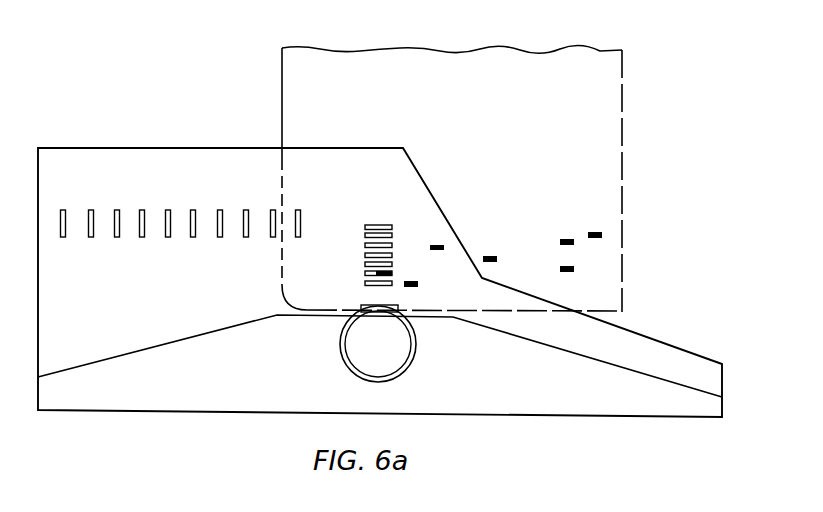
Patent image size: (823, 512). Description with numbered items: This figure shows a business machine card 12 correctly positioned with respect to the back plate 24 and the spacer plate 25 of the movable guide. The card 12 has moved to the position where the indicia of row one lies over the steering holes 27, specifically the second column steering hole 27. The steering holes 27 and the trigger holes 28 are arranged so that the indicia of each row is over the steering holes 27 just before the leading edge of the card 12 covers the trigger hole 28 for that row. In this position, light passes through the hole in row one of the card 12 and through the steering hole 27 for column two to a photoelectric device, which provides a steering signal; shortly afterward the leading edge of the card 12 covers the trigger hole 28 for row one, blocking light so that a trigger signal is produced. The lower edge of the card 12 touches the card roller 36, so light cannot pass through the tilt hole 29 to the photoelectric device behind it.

The back plate 24 is at (157, 146).
The spacer plate 25 is at (113, 405).
The card 12 is at (627, 151).
The trigger holes 28 is at (57, 207).
The steering holes 27 is at (345, 227).
The tilt hole 29 is at (366, 320).
The card roller 36 is at (400, 355).